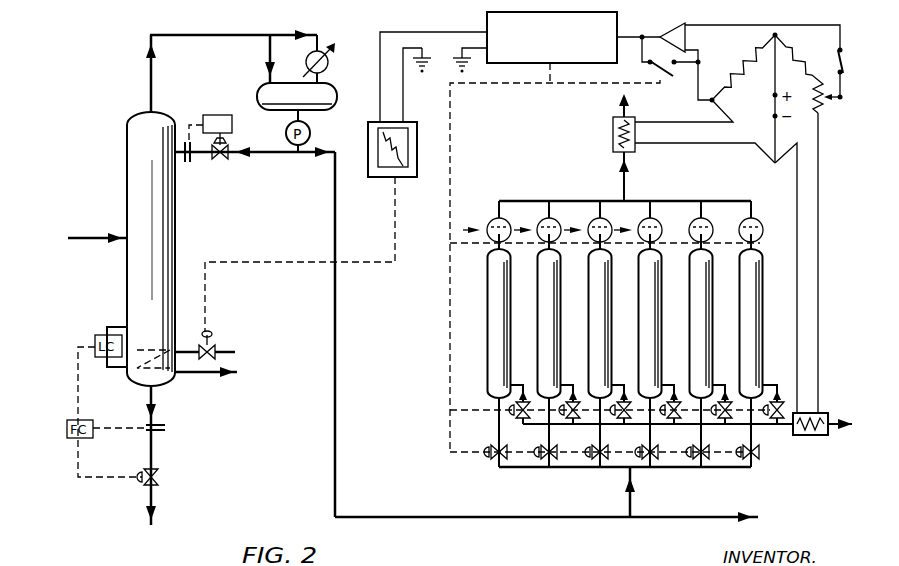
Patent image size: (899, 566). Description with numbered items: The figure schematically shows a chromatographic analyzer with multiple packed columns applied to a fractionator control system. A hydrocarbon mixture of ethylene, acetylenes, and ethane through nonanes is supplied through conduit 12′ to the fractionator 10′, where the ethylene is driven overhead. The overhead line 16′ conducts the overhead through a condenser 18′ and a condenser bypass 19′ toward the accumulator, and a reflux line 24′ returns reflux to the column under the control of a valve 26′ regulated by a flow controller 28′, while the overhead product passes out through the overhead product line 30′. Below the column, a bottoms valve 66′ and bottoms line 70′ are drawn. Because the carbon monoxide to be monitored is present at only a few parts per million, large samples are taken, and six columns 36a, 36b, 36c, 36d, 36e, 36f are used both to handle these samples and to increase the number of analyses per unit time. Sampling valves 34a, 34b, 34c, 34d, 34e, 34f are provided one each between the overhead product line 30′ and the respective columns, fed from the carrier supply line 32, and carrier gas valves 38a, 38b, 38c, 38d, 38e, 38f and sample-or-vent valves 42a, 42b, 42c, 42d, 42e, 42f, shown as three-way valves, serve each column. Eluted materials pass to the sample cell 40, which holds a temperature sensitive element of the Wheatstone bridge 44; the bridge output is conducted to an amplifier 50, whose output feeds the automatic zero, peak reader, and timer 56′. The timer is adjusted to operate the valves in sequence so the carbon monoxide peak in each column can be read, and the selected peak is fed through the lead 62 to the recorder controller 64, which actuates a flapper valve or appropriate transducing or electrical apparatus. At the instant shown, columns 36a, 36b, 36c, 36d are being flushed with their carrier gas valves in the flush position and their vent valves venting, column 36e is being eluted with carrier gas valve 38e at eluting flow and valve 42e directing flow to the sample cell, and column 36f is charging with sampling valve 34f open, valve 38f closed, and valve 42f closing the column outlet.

The fractionator 10' is at (131, 249).
The conduit 12' is at (94, 249).
The overhead line 16' is at (169, 73).
The condenser 18' is at (334, 59).
The condenser bypass 19' is at (254, 59).
The reflux line 24' is at (255, 161).
The valve 26' is at (231, 154).
The flow controller 28' is at (229, 127).
The overhead product line 30' is at (336, 316).
The carrier gas supply line 32 is at (632, 505).
The sampling valve 34a is at (495, 461).
The sampling valve 34b is at (545, 461).
The sampling valve 34c is at (596, 461).
The sampling valve 34d is at (656, 461).
The sampling valve 34e is at (706, 461).
The sampling valve 34f is at (758, 461).
The column 36a is at (489, 257).
The column 36b is at (538, 274).
The column 36c is at (586, 272).
The column 36d is at (638, 272).
The column 36e is at (716, 278).
The column 36f is at (755, 256).
The carrier gas valve 38a is at (514, 414).
The carrier gas valve 38b is at (598, 418).
The carrier gas valve 38c is at (648, 418).
The carrier gas valve 38d is at (698, 418).
The carrier gas valve 38e is at (748, 418).
The carrier gas valve 38f is at (768, 424).
The sample cell 40 is at (612, 148).
The sample-or-vent valve 42a is at (488, 218).
The sample-or-vent valve 42b is at (541, 218).
The sample-or-vent valve 42c is at (590, 218).
The sample-or-vent valve 42d is at (641, 218).
The sample-or-vent valve 42e is at (691, 218).
The sample-or-vent valve 42f is at (741, 218).
The Wheatstone bridge 44 is at (826, 113).
The amplifier 50 is at (681, 22).
The automatic zero, peak reader, and timer 56' is at (567, 31).
The lead 62 is at (444, 30).
The recorder controller 64 is at (410, 139).
The bottoms control valve 66' is at (297, 268).
The bottoms product line 70' is at (225, 346).